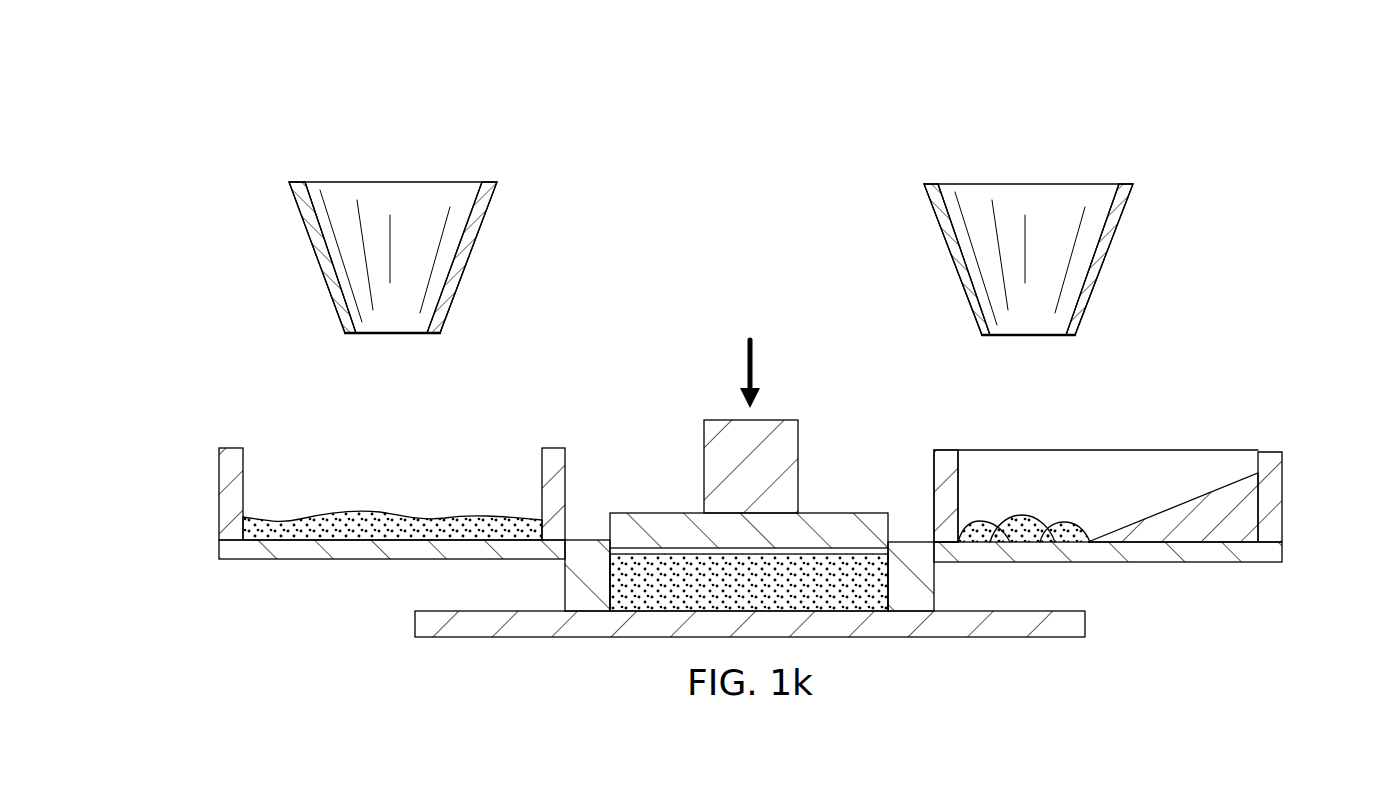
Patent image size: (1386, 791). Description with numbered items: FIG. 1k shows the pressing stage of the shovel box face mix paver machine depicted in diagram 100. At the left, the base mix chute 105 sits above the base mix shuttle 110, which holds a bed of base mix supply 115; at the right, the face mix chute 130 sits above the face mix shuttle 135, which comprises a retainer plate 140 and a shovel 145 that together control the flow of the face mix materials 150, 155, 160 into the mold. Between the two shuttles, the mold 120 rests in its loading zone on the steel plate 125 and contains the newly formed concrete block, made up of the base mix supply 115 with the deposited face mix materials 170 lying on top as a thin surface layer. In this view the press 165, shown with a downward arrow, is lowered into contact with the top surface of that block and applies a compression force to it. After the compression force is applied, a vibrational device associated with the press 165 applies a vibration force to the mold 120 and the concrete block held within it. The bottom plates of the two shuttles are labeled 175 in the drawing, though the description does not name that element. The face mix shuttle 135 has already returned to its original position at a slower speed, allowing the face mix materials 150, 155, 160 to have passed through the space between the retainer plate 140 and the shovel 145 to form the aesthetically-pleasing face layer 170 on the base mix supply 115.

The diagram of shovel box face mix paver machine 100 is at (571, 111).
The base mix chute 105 is at (378, 182).
The base mix shuttle 110 is at (198, 470).
The base mix supply 115 is at (772, 592).
The mold 120 is at (546, 578).
The steel plate 125 is at (1087, 624).
The face mix chute 130 is at (1060, 184).
The face mix shuttle 135 is at (1298, 467).
The retainer plate 140 is at (948, 450).
The shovel 145 is at (1283, 500).
The face mix material 150 is at (973, 528).
The face mix material 155 is at (1020, 526).
The face mix material 160 is at (1068, 530).
The press 165 is at (776, 420).
The deposited face mix materials 170 is at (846, 548).
The reservoir bottom plate 175 is at (219, 548).